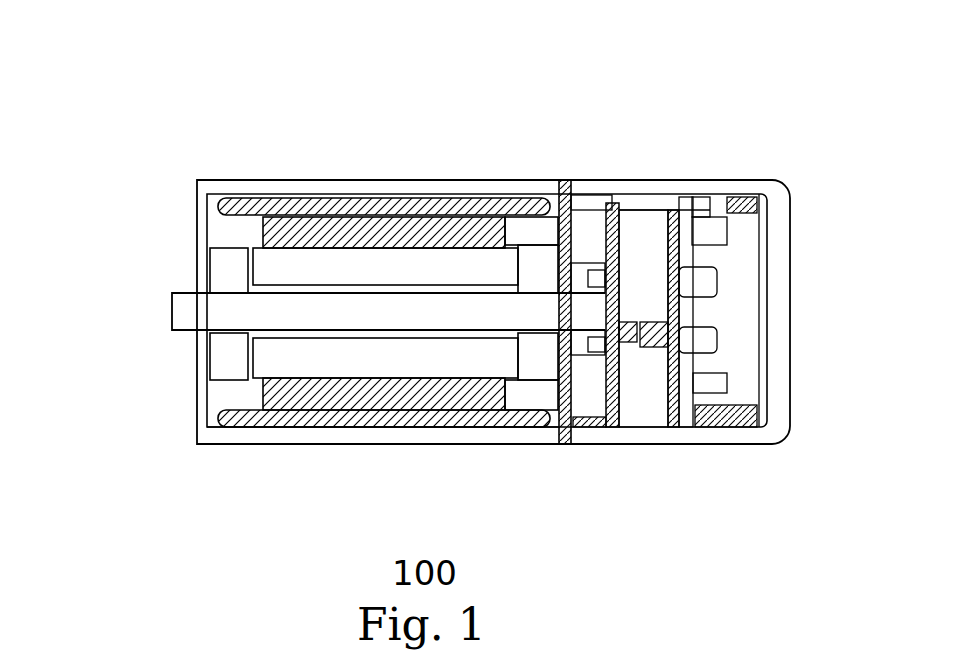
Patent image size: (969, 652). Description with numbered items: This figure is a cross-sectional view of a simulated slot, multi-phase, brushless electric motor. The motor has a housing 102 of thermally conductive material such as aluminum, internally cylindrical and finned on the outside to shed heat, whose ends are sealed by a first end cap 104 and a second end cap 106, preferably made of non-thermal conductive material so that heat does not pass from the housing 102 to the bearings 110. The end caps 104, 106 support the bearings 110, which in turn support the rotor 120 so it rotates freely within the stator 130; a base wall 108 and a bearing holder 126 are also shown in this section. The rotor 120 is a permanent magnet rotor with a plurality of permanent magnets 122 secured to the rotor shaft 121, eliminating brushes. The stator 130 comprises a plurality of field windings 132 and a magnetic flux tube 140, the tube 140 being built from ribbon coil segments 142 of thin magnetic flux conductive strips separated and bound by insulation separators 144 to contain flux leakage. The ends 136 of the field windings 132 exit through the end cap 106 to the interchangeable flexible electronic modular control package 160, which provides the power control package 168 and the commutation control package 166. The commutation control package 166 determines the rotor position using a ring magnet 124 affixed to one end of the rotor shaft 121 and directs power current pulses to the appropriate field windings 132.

The housing 102 is at (420, 178).
The first end cap 104 is at (197, 181).
The second end cap 106 is at (563, 178).
The housing base wall 108 is at (236, 438).
The bearings 110 is at (222, 357).
The rotor 120 is at (145, 318).
The rotor shaft 121 is at (173, 340).
The permanent magnets 122 is at (265, 363).
The ring magnet 124 is at (598, 260).
The bearing holder 126 is at (600, 357).
The stator 130 is at (232, 218).
The field windings 132 is at (230, 197).
The ends of the field windings 136 is at (598, 195).
The magnetic flux tube 140 is at (257, 193).
The ribbon coil segments 142 is at (370, 197).
The insulation separators 144 is at (327, 195).
The interchangeable flexible electronic modular control package 160 is at (673, 483).
The commutation control package 166 is at (630, 260).
The power control package 168 is at (690, 313).